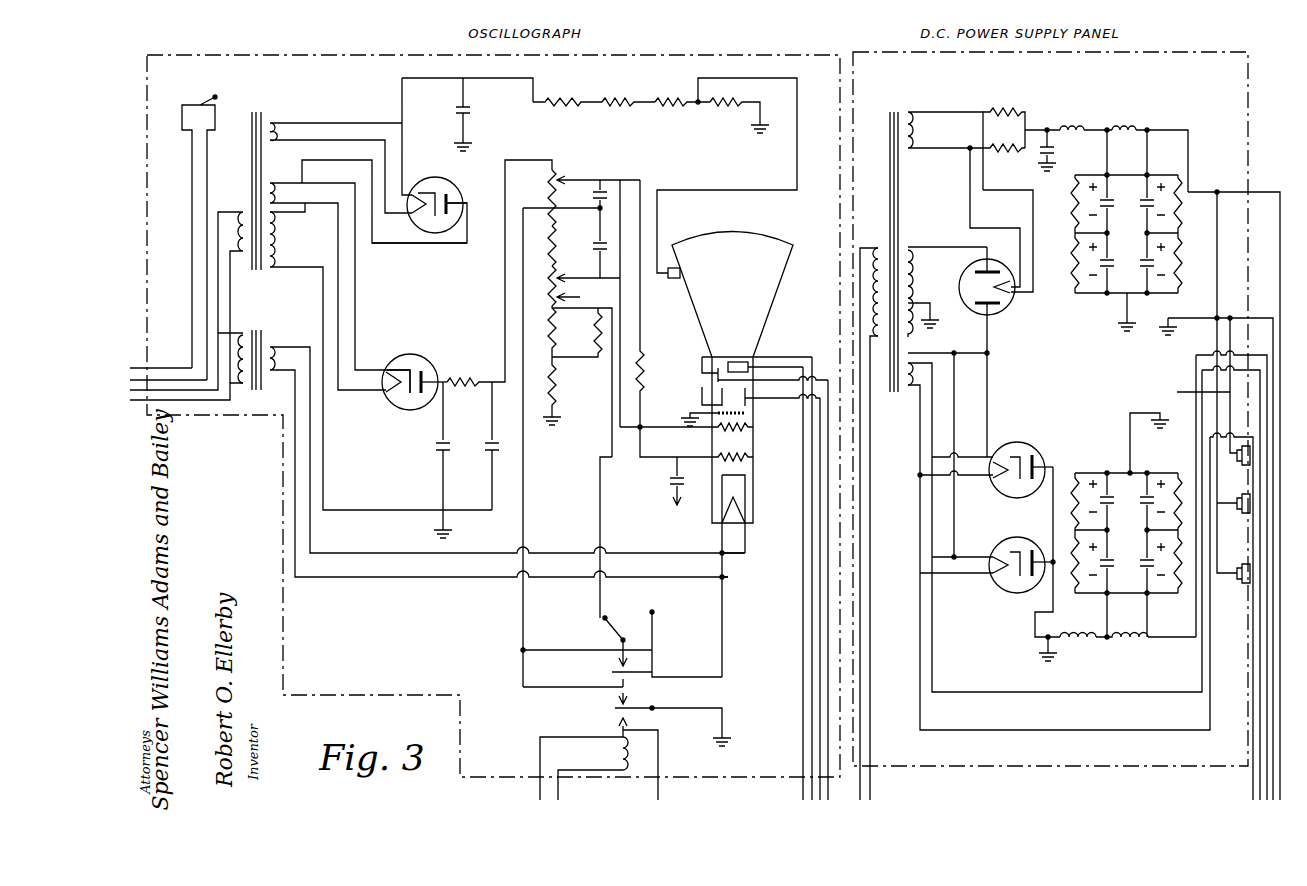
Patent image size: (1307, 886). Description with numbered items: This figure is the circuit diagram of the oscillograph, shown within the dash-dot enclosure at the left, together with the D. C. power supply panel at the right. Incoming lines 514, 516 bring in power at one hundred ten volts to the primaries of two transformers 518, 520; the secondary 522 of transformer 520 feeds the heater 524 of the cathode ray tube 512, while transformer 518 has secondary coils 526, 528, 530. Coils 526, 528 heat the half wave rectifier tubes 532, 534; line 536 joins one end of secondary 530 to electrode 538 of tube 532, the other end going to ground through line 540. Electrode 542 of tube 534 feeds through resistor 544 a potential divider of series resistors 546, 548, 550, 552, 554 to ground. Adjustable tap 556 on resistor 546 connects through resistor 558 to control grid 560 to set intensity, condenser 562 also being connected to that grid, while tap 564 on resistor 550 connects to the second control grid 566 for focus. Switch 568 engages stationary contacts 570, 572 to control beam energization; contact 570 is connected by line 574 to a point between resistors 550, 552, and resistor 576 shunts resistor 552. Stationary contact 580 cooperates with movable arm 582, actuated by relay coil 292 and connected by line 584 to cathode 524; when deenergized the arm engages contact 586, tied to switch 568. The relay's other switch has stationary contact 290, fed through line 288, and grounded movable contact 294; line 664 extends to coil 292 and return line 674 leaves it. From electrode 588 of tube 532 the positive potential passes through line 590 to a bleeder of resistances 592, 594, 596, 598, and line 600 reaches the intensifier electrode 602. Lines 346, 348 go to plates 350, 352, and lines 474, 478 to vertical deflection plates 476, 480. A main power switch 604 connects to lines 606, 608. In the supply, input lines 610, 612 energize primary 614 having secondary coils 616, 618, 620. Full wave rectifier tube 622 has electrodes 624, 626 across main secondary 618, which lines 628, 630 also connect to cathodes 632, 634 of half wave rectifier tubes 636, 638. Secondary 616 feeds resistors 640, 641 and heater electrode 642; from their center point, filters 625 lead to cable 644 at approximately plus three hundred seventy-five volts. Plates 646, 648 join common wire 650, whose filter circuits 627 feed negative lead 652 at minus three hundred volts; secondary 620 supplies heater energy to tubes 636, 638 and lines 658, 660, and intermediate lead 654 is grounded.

The main power switch 604 is at (200, 103).
The line 606 is at (192, 232).
The line 608 is at (207, 175).
The secondary coil 526 is at (273, 125).
The secondary coil 528 is at (273, 185).
The secondary coil 530 is at (275, 238).
The incoming line 516 is at (243, 215).
The transformer 518 is at (254, 262).
The transformer 520 is at (258, 332).
The secondary 522 is at (273, 349).
The incoming line 514 is at (215, 400).
The electrode 588 is at (420, 186).
The half wave rectifier tube 532 is at (452, 190).
The electrode 538 is at (447, 206).
The line 536 is at (410, 244).
The half wave rectifier tube 534 is at (408, 354).
The electrode 542 is at (418, 398).
The resistor 544 is at (465, 378).
The line 540 is at (358, 508).
The line 590 is at (420, 78).
The resistance 592 is at (560, 101).
The resistance 594 is at (630, 104).
The resistance 596 is at (682, 101).
The resistance 598 is at (728, 104).
The line 600 is at (758, 79).
The intensifier electrode 602 is at (672, 280).
The resistor 546 is at (552, 165).
The adjustable tap 556 is at (562, 178).
The resistor 548 is at (558, 246).
The adjustable tap 564 is at (560, 280).
The resistor 550 is at (575, 298).
The resistor 552 is at (557, 328).
The resistor 576 is at (596, 334).
The resistor 554 is at (558, 384).
The stationary contact 570 is at (524, 522).
The line 574 is at (599, 500).
The resistor 558 is at (645, 368).
The condenser 562 is at (672, 490).
The cathode ray tube 512 is at (759, 235).
The cathode ray plate 352 is at (716, 380).
The cathode ray plate 350 is at (750, 364).
The vertical deflection plate 476 is at (720, 400).
The vertical deflection plate 480 is at (748, 399).
The second control grid 566 is at (750, 430).
The control grid 560 is at (750, 458).
The heater 524 is at (750, 510).
The line 474 is at (826, 662).
The line 478 is at (819, 690).
The line 348 is at (811, 729).
The line 346 is at (802, 791).
The switch 568 is at (615, 632).
The stationary contact 572 is at (655, 612).
The line 584 is at (723, 620).
The contact 586 is at (630, 660).
The movable arm 582 is at (640, 673).
The stationary contact 580 is at (632, 681).
The movable contact 294 is at (636, 709).
The stationary contact 290 is at (614, 714).
The relay coil 292 is at (617, 754).
The power line 664 is at (539, 788).
The return line 674 is at (562, 791).
The line 288 is at (660, 791).
The primary 614 is at (878, 262).
The input line 612 is at (863, 758).
The input line 610 is at (873, 786).
The secondary coil 616 is at (911, 122).
The resistor 640 is at (1000, 111).
The resistor 641 is at (1004, 150).
The full wave rectifier tube 622 is at (1000, 323).
The electrode 624 is at (988, 270).
The line 628 is at (952, 247).
The electrode 626 is at (985, 306).
The heater electrode 642 is at (1003, 298).
The main secondary coil 618 is at (912, 264).
The line 630 is at (990, 380).
The secondary 620 is at (920, 390).
The line 658 is at (950, 692).
The line 660 is at (983, 731).
The half wave rectifier tube 638 is at (1007, 441).
The cathode 634 is at (1021, 458).
The plate 648 is at (1040, 465).
The common wire 650 is at (1057, 482).
The half wave rectifier tube 636 is at (1006, 535).
The cathode 632 is at (1021, 550).
The plate 646 is at (1021, 578).
The filter circuits 627 is at (1090, 604).
The filters 625 is at (1111, 302).
The power supply cable 644 is at (1214, 280).
The intermediate cable lead 654 is at (1258, 316).
The negative power lead 652 is at (1195, 356).